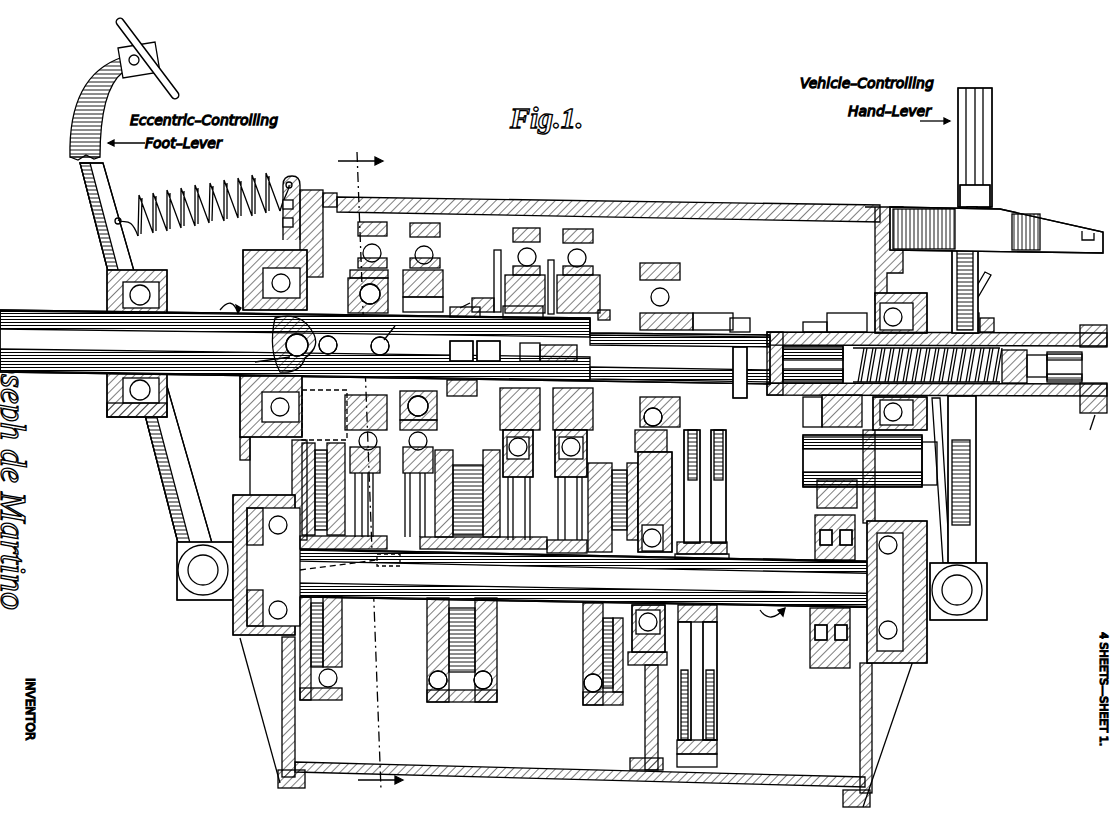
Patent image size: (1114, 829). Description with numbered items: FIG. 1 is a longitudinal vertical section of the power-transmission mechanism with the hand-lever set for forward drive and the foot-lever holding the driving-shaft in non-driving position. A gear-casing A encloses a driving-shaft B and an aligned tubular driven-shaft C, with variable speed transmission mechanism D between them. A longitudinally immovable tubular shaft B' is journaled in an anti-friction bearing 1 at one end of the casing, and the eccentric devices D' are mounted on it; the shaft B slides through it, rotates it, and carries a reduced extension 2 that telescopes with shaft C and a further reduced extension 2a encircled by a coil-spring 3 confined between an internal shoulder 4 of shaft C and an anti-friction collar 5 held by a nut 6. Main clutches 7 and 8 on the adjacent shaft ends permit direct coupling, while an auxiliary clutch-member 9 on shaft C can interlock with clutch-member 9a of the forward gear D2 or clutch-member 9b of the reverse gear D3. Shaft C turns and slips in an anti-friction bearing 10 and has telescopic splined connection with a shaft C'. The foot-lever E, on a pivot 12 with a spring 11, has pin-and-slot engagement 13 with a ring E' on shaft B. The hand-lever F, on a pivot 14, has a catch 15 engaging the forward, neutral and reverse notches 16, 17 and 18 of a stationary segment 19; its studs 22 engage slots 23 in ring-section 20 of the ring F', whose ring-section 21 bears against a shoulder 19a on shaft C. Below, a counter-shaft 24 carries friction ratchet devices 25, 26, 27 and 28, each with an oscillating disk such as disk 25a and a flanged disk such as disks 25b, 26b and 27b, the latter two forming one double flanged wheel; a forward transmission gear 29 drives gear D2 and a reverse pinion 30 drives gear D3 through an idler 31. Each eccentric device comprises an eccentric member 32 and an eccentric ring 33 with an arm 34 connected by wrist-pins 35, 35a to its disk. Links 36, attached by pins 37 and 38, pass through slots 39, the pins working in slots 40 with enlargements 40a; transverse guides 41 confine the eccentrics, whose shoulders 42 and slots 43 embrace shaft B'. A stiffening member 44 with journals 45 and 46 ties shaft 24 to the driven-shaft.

The anti-friction bearing 1 is at (305, 296).
The reduced extension 2 is at (778, 330).
The further reduced extension 2a is at (800, 385).
The coil-spring 3 is at (930, 335).
The internal shoulder 4 is at (830, 408).
The anti-friction collar 5 is at (1030, 343).
The nut 6 is at (1060, 398).
The main clutch 7 is at (606, 325).
The main clutch 8 is at (685, 312).
The auxiliary clutch-member 9 is at (745, 345).
The clutch-member 9a is at (740, 318).
The clutch-member 9b is at (812, 320).
The anti-friction bearing 10 is at (905, 296).
The spring 11 is at (208, 188).
The pivot 12 is at (188, 572).
The pin-and-slot engagement 13 is at (115, 370).
The pivot 14 is at (968, 588).
The manually actuated catch 15 is at (990, 205).
The forward notch 16 is at (965, 212).
The neutral notch 17 is at (1050, 225).
The reverse notch 18 is at (1090, 232).
The stationary segment 19 is at (1005, 252).
The shoulder 19a is at (990, 400).
The ring-section 20 is at (970, 310).
The ring-section 21 is at (978, 322).
The studs 22 is at (960, 420).
The slots 23 is at (995, 330).
The counter-shaft 24 is at (750, 565).
The friction ratchet device 25 is at (342, 648).
The gear hub 25a is at (342, 630).
The bearing support 25b is at (298, 476).
The friction ratchet device 26 is at (428, 636).
The flanged disk 26b is at (443, 704).
The friction ratchet device 27 is at (497, 648).
The flanged disk 27b is at (486, 704).
The friction ratchet device 28 is at (583, 644).
The forward transmission gear 29 is at (720, 500).
The reverse pinion 30 is at (815, 525).
The idler 31 is at (817, 496).
The eccentric member 32 is at (355, 282).
The eccentric ring 33 is at (378, 222).
The arm 34 is at (420, 482).
The wrist-pin 35 is at (350, 566).
The key 35a is at (390, 604).
The link 36 is at (348, 296).
The pin 37 is at (385, 280).
The pin 38 is at (334, 345).
The slots 39 is at (399, 329).
The slots 40 is at (470, 295).
The enlargements 40a is at (261, 365).
The transverse guides 41 is at (614, 286).
The shoulders 42 is at (440, 275).
The slots 43 is at (345, 420).
The stiffening member 44 is at (656, 552).
The journal 45 is at (640, 675).
The journal 46 is at (680, 270).
The gear-casing A is at (285, 690).
The driving-shaft B is at (385, 343).
The tubular shaft B' is at (466, 302).
The driven-shaft C is at (937, 347).
The shaft C' is at (1090, 430).
The variable speed transmission mechanism D is at (468, 445).
The eccentric devices D' is at (516, 280).
The forward gear D2 is at (718, 313).
The reverse gear D3 is at (843, 312).
The foot-lever E is at (141, 282).
The ring E' is at (135, 428).
The vehicle-controlling hand-lever F is at (989, 147).
The ring F' is at (983, 301).